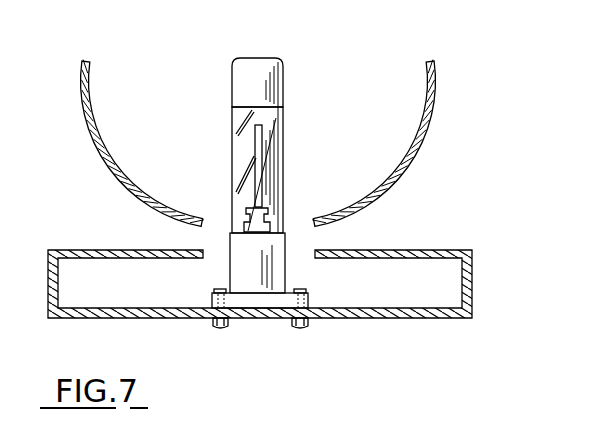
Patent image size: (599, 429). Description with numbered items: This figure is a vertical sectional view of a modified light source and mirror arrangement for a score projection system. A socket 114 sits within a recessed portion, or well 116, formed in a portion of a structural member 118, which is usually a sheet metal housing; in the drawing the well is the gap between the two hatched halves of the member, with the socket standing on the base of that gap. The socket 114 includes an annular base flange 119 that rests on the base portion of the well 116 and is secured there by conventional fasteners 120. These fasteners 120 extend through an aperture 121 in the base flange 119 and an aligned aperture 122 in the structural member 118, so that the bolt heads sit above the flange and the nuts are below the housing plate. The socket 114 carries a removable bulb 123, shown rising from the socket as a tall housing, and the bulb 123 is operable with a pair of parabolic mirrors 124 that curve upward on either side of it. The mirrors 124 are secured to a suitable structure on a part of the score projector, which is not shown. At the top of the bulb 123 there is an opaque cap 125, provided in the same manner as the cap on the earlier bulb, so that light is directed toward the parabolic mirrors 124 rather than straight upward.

The socket 114 is at (273, 252).
The well 116 is at (208, 270).
The structural member 118 is at (425, 250).
The annular base flange 119 is at (312, 303).
The fasteners 120 is at (210, 286).
The aperture 121 is at (212, 320).
The aperture 122 is at (230, 318).
The removable bulb 123 is at (281, 140).
The parabolic mirrors 124 is at (93, 108).
The opaque cap 125 is at (283, 62).